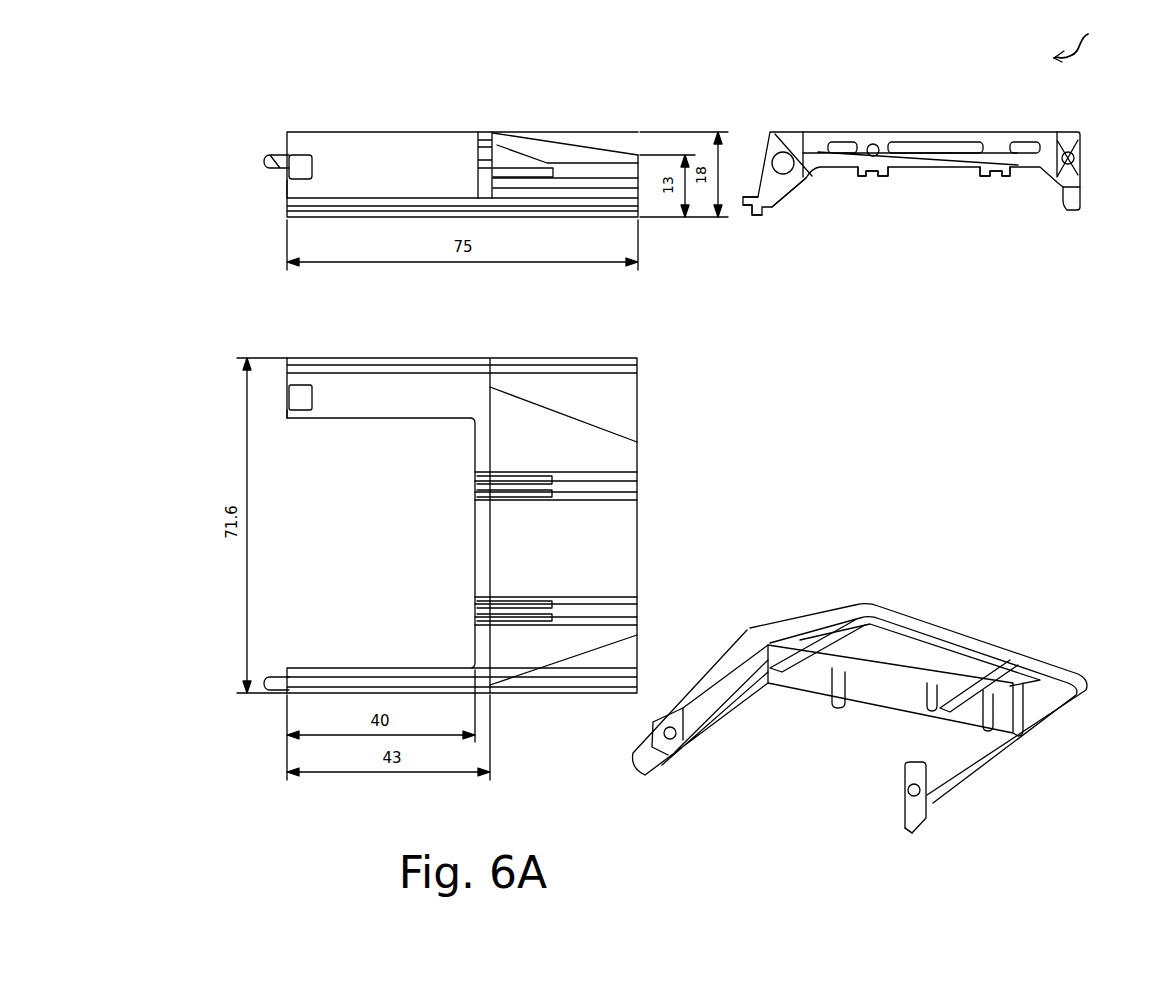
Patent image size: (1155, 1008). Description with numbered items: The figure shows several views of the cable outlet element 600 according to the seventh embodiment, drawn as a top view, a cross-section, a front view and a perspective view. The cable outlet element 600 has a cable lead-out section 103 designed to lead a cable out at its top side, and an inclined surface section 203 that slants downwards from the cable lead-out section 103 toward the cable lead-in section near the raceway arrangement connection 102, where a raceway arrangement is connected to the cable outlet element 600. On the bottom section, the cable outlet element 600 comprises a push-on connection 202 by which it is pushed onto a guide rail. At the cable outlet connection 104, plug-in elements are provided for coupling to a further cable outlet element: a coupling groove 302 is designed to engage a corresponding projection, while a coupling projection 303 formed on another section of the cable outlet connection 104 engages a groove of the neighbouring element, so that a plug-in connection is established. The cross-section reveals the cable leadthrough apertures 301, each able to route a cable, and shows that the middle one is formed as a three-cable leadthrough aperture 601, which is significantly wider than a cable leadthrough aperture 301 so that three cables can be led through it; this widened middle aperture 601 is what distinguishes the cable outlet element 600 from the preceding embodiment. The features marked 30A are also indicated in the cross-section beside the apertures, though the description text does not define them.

The cable outlet element 600 is at (1097, 42).
The raceway arrangement connection 102 is at (638, 188).
The cable lead-out section 103 is at (378, 575).
The cable outlet connection 104 is at (287, 188).
The push-on connection 202 is at (758, 213).
The inclined surface section 203 is at (570, 150).
The cable leadthrough aperture 301 is at (812, 652).
The coupling groove 302 is at (300, 163).
The coupling projection 303 is at (280, 160).
The clip notch 30A is at (840, 178).
The three-cable leadthrough aperture 601 is at (928, 167).